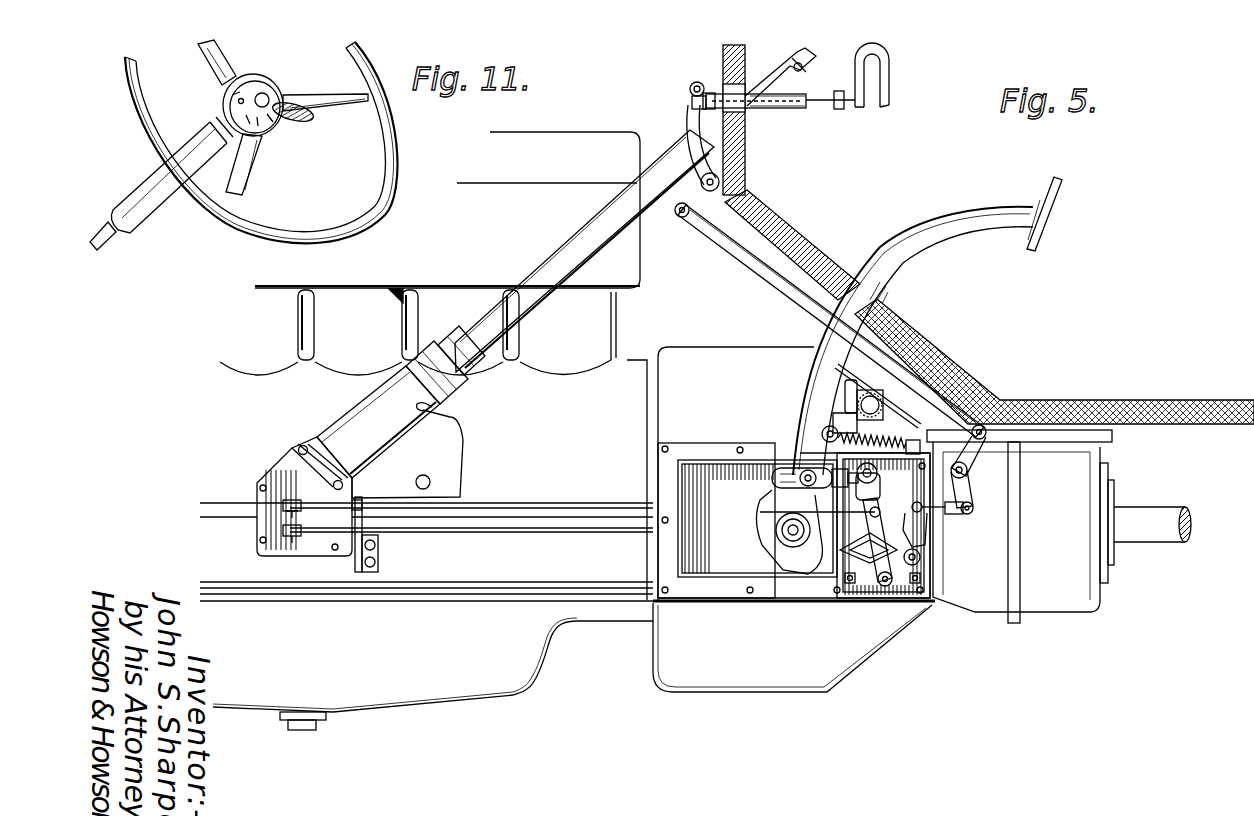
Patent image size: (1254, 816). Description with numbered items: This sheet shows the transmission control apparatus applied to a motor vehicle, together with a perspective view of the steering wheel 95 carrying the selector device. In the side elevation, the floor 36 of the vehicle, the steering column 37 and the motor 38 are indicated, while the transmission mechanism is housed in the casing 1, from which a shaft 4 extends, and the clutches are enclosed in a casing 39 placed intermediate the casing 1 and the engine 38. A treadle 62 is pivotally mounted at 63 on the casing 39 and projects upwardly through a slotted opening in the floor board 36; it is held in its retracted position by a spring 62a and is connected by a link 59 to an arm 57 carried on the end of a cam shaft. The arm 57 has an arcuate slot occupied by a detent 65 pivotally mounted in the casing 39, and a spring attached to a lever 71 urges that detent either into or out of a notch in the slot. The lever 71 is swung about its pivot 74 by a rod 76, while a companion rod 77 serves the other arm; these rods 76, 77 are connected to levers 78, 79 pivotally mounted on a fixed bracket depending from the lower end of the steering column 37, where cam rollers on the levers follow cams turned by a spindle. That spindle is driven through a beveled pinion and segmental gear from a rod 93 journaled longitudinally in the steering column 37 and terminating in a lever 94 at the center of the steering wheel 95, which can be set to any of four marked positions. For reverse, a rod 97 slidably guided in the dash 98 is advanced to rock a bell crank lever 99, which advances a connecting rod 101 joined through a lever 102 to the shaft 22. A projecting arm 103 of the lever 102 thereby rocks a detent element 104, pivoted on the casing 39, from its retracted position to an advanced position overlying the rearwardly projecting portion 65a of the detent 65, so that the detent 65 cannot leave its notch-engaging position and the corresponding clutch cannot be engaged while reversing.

In FIG. 5, the transmission mechanism casing 1 is at (1075, 591).
In FIG. 5, the output shaft 4 is at (1170, 520).
In FIG. 5, the shaft 22 is at (968, 474).
In FIG. 5, the floor 36 is at (928, 341).
In FIG. 11, the steering column 37 is at (160, 172).
In FIG. 5, the steering column 37 is at (646, 208).
In FIG. 5, the motor 38 is at (472, 248).
In FIG. 5, the casing 39 is at (838, 683).
In FIG. 5, the arm 57 is at (879, 482).
In FIG. 5, the link 59 is at (800, 462).
In FIG. 5, the treadle 62 is at (904, 237).
In FIG. 5, the spring 62a is at (884, 421).
In FIG. 5, the pivot 63 is at (776, 530).
In FIG. 5, the detent 65 is at (862, 542).
In FIG. 5, the rearwardly projecting portion of detent 65a is at (921, 559).
In FIG. 5, the lever 71 is at (890, 535).
In FIG. 5, the pivot 74 is at (880, 588).
In FIG. 5, the rod 76 is at (334, 510).
In FIG. 5, the rod 77 is at (313, 538).
In FIG. 5, the lever 78 is at (290, 505).
In FIG. 5, the lever 79 is at (283, 532).
In FIG. 11, the rod 93 is at (100, 241).
In FIG. 11, the lever 94 is at (300, 119).
In FIG. 11, the steering wheel 95 is at (258, 228).
In FIG. 5, the rod 97 is at (860, 103).
In FIG. 5, the dash 98 is at (723, 53).
In FIG. 5, the bell crank lever 99 is at (697, 121).
In FIG. 5, the connecting rod 101 is at (768, 278).
In FIG. 5, the lever 102 is at (978, 450).
In FIG. 5, the projecting arm 103 is at (966, 502).
In FIG. 5, the detent element 104 is at (915, 537).